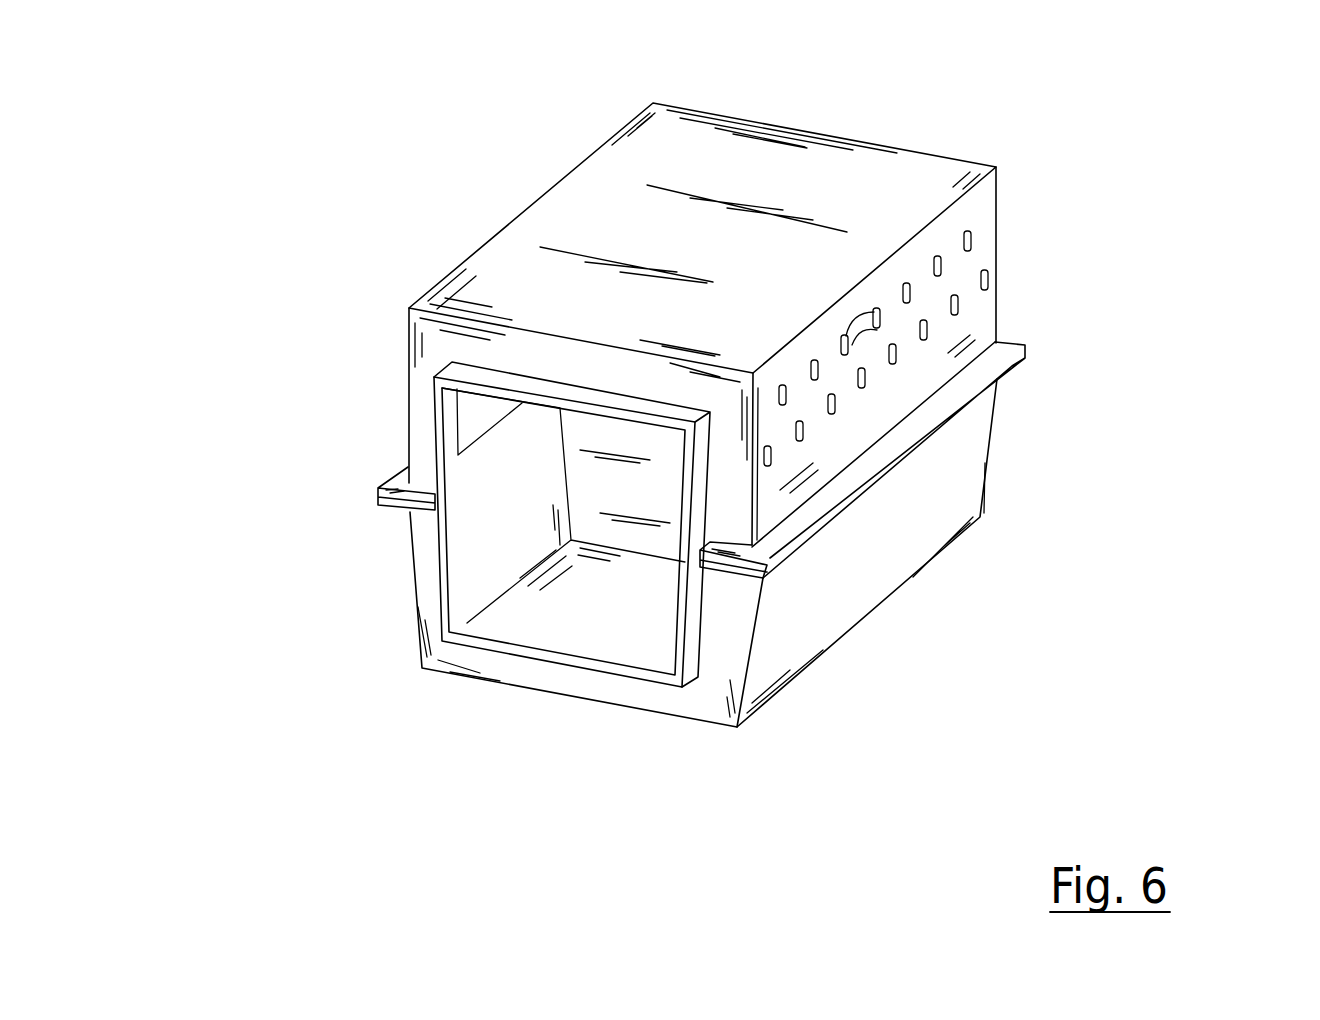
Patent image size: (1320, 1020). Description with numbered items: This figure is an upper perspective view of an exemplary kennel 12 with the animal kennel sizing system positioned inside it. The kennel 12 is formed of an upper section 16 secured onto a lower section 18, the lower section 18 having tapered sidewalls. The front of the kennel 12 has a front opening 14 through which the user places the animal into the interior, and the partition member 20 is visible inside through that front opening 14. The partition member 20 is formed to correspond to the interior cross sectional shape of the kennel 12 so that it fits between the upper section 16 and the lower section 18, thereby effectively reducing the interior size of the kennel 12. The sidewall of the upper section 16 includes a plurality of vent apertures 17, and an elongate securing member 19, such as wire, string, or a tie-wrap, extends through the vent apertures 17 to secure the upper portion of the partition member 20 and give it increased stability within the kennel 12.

The kennel 12 is at (711, 386).
The front opening 14 is at (414, 518).
The upper section 16 is at (623, 215).
The vent apertures 17 is at (972, 240).
The lower section 18 is at (973, 478).
The securing member 19 is at (863, 338).
The partition member 20 is at (585, 489).